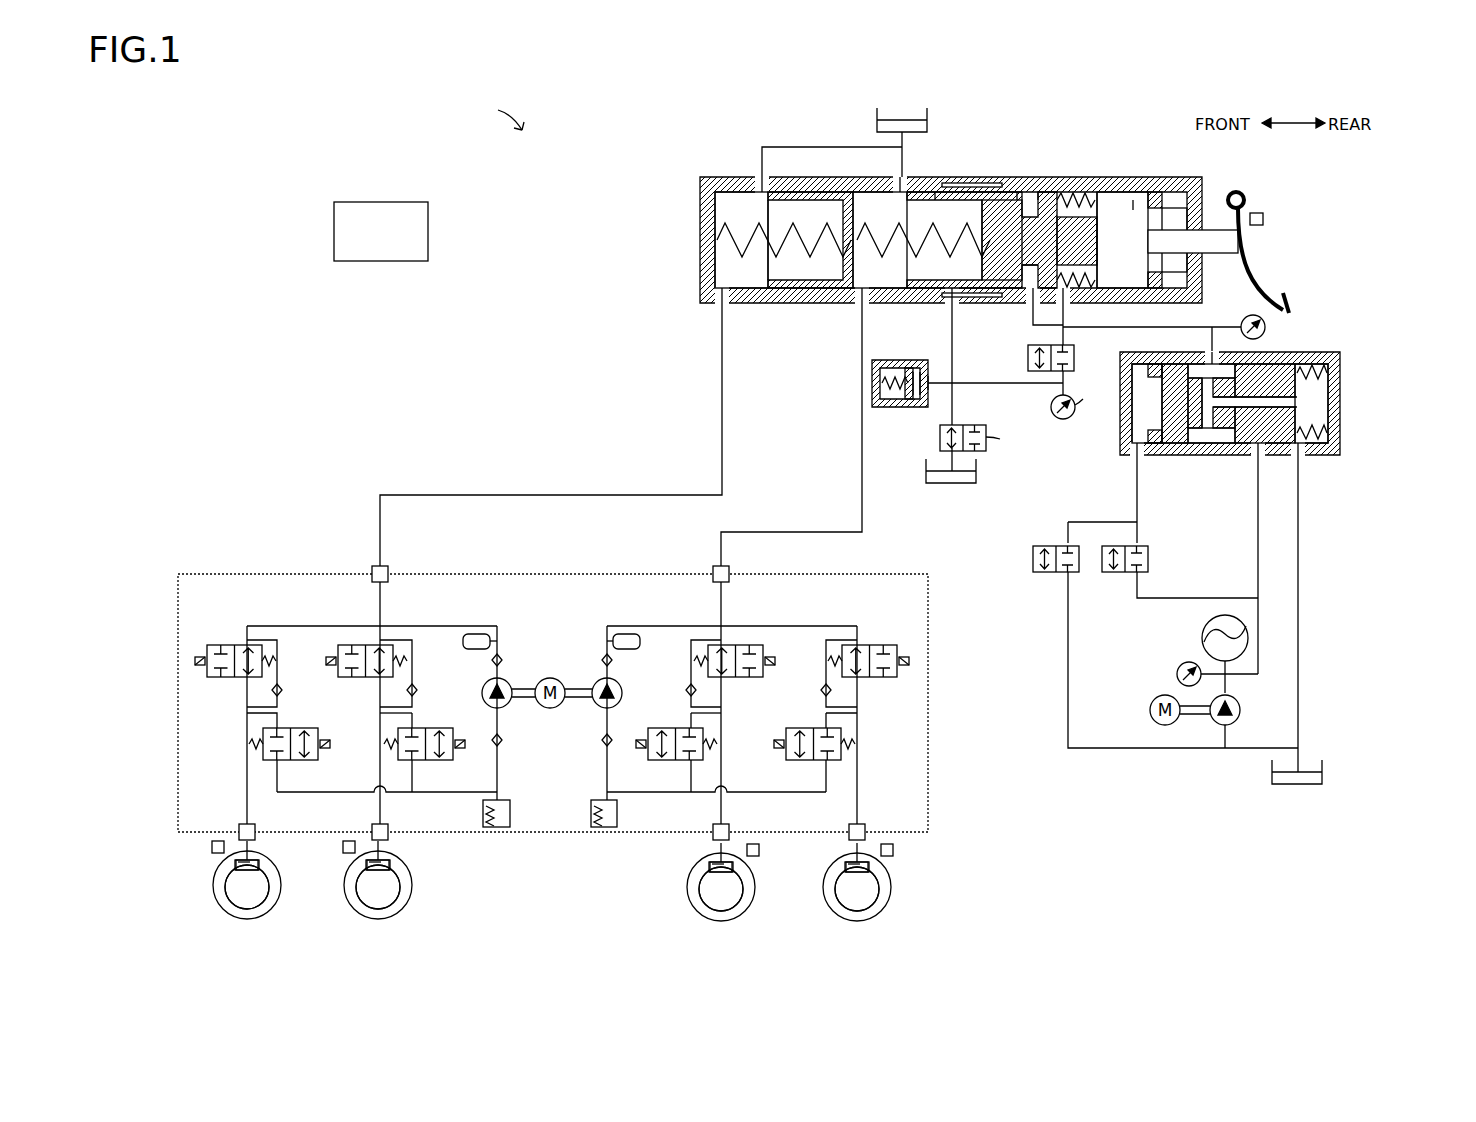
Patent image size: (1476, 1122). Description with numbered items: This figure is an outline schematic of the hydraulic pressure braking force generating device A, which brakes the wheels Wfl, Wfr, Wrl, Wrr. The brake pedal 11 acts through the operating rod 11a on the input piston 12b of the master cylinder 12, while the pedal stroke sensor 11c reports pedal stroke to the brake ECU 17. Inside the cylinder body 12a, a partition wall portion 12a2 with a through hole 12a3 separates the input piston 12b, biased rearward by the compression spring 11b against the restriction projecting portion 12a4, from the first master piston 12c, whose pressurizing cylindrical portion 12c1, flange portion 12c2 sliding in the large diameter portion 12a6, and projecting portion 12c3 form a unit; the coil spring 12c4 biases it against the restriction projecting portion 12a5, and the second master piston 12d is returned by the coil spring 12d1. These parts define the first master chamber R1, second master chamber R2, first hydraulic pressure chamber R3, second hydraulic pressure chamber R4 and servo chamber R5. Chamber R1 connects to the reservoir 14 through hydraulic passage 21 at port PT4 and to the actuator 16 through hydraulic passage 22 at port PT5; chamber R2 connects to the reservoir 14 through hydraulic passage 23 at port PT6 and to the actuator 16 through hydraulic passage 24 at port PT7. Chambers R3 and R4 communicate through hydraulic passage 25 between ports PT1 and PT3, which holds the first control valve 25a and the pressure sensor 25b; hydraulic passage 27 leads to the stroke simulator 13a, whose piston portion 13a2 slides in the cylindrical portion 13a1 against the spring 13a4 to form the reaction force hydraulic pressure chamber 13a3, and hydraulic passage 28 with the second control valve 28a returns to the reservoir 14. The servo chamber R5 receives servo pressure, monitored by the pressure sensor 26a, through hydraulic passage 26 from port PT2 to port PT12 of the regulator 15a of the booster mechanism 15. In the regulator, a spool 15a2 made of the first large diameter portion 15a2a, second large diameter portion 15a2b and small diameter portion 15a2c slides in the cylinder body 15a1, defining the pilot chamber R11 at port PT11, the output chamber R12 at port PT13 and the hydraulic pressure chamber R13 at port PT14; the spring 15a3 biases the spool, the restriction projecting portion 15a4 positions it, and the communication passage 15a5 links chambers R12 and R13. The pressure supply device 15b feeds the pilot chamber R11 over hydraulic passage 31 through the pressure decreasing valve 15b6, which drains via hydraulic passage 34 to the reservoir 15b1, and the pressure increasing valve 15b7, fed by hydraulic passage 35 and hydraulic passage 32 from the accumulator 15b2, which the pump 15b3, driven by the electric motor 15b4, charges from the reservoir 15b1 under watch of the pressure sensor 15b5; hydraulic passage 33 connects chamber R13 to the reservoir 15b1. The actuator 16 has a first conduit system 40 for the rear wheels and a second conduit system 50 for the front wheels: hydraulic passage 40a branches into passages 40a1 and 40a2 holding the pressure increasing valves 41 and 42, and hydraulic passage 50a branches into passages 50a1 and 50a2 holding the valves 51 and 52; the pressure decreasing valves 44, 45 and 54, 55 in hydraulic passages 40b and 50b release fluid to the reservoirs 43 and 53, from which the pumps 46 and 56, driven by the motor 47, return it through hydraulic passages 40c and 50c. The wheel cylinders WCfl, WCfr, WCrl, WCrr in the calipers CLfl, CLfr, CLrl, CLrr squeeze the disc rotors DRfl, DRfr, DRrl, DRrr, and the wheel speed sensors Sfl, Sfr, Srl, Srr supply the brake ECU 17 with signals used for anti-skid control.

The hydraulic pressure braking force generating device A is at (500, 115).
The brake pedal 11 is at (1250, 271).
The operating rod 11a is at (1240, 243).
The compression spring 11b is at (1073, 205).
The pedal stroke sensor 11c is at (1265, 219).
The master cylinder 12 is at (953, 225).
The cylinder body 12a is at (698, 186).
The partition wall portion 12a2 is at (1057, 200).
The through hole 12a3 is at (1058, 216).
The restriction projecting portion 12a4 is at (1160, 189).
The restriction projecting portion 12a5 is at (1016, 190).
The large diameter portion 12a6 is at (980, 185).
The input piston 12b is at (1133, 195).
The first master piston 12c is at (915, 288).
The pressurizing cylindrical portion 12c1 is at (936, 192).
The flange portion 12c2 is at (1037, 190).
The projecting portion 12c3 is at (1131, 200).
The coil spring 12c4 is at (920, 368).
The second master piston 12d is at (795, 285).
The coil spring 12d1 is at (778, 288).
The stroke simulator 13a is at (869, 395).
The cylindrical portion 13a1 is at (882, 397).
The piston portion 13a2 is at (907, 396).
The reaction force hydraulic pressure chamber 13a3 is at (910, 371).
The spring 13a4 is at (920, 376).
The reservoir 14 is at (875, 128).
The booster mechanism 15 is at (1241, 552).
The regulator 15a is at (1261, 423).
The cylinder body 15a1 is at (1345, 415).
The spool 15a2 is at (1283, 435).
The first large diameter portion 15a2a is at (1272, 448).
The second large diameter portion 15a2b is at (1174, 450).
The small diameter portion 15a2c is at (1202, 446).
The spring 15a3 is at (1319, 352).
The restriction projecting portion 15a4 is at (1150, 447).
The communication passage 15a5 is at (1302, 400).
The pressure supply device 15b is at (1207, 619).
The reservoir 15b1 is at (1322, 772).
The accumulator 15b2 is at (1202, 640).
The pump 15b3 is at (1241, 710).
The electric motor 15b4 is at (1150, 708).
The pressure sensor 15b5 is at (1178, 673).
The pressure decreasing valve 15b6 is at (1051, 572).
The pressure increasing valve 15b7 is at (1118, 572).
The actuator 16 is at (850, 576).
The brake ECU 17 is at (386, 202).
The hydraulic passage 21 is at (900, 145).
The hydraulic passage 22 is at (790, 532).
The hydraulic passage 23 is at (789, 147).
The hydraulic passage 24 is at (536, 495).
The hydraulic passage 25 is at (1056, 412).
The first control valve 25a is at (1073, 357).
The pressure sensor 25b is at (1096, 391).
The hydraulic passage 26 is at (1193, 327).
The pressure sensor 26a is at (1266, 327).
The hydraulic passage 27 is at (944, 384).
The hydraulic passage 28 is at (956, 416).
The second control valve 28a is at (990, 439).
The hydraulic passage 31 is at (1127, 522).
The hydraulic passage 32 is at (1258, 589).
The hydraulic passage 33 is at (1298, 683).
The hydraulic passage 34 is at (1068, 656).
The hydraulic passage 35 is at (1192, 598).
The first conduit system 40 is at (750, 727).
The hydraulic passage 40a is at (723, 612).
The branched hydraulic passage 40a1 is at (742, 704).
The branched hydraulic passage 40a2 is at (875, 708).
The hydraulic passage 40b is at (749, 791).
The hydraulic passage 40c is at (611, 738).
The first pressure increasing control valve 41 is at (761, 656).
The second pressure increasing valve 42 is at (858, 644).
The reservoir 43 is at (604, 830).
The first pressure decreasing control valve 44 is at (672, 726).
The first pressure decreasing control valve 45 is at (808, 726).
The pump 46 is at (620, 688).
The motor 47 is at (552, 679).
The second conduit system 50 is at (348, 727).
The hydraulic passage 50a is at (377, 608).
The branched hydraulic passage 50a1 is at (379, 714).
The branched hydraulic passage 50a2 is at (246, 700).
The hydraulic passage 50b is at (348, 791).
The hydraulic passage 50c is at (493, 738).
The first pressure increasing control valve 51 is at (338, 656).
The second pressure increasing valve 52 is at (229, 645).
The reservoir 53 is at (496, 830).
The second pressure decreasing control valve 54 is at (430, 728).
The second pressure decreasing control valve 55 is at (292, 728).
The pump 56 is at (488, 687).
The port PT1 is at (1064, 304).
The port PT2 is at (1031, 350).
The port PT3 is at (952, 304).
The port PT4 is at (900, 176).
The port PT5 is at (862, 305).
The port PT6 is at (762, 176).
The port PT7 is at (722, 304).
The port PT11 is at (1134, 456).
The port PT12 is at (1208, 350).
The port PT13 is at (1264, 459).
The port PT14 is at (1300, 456).
The first master chamber R1 is at (882, 288).
The second master chamber R2 is at (760, 300).
The first hydraulic pressure chamber R3 is at (1112, 288).
The second hydraulic pressure chamber R4 is at (980, 285).
The servo chamber R5 is at (1034, 298).
The pilot chamber R11 is at (1138, 414).
The output chamber R12 is at (1224, 442).
The hydraulic pressure chamber R13 is at (1340, 430).
The left front wheel Wfl is at (226, 918).
The right front wheel Wfr is at (362, 918).
The left rear wheel Wrl is at (741, 918).
The right rear wheel Wrr is at (882, 918).
The wheel speed sensor Sfl is at (210, 848).
The wheel speed sensor Sfr is at (343, 848).
The wheel speed sensor Srl is at (760, 850).
The wheel speed sensor Srr is at (894, 850).
The caliper CLfl is at (230, 869).
The caliper CLfr is at (365, 869).
The caliper CLrl is at (734, 868).
The caliper CLrr is at (874, 868).
The wheel cylinder WCfl is at (233, 870).
The wheel cylinder WCfr is at (366, 870).
The wheel cylinder WCrl is at (736, 872).
The wheel cylinder WCrr is at (880, 872).
The disc rotor DRfl is at (228, 887).
The disc rotor DRfr is at (362, 887).
The disc rotor DRrl is at (738, 892).
The disc rotor DRrr is at (882, 892).